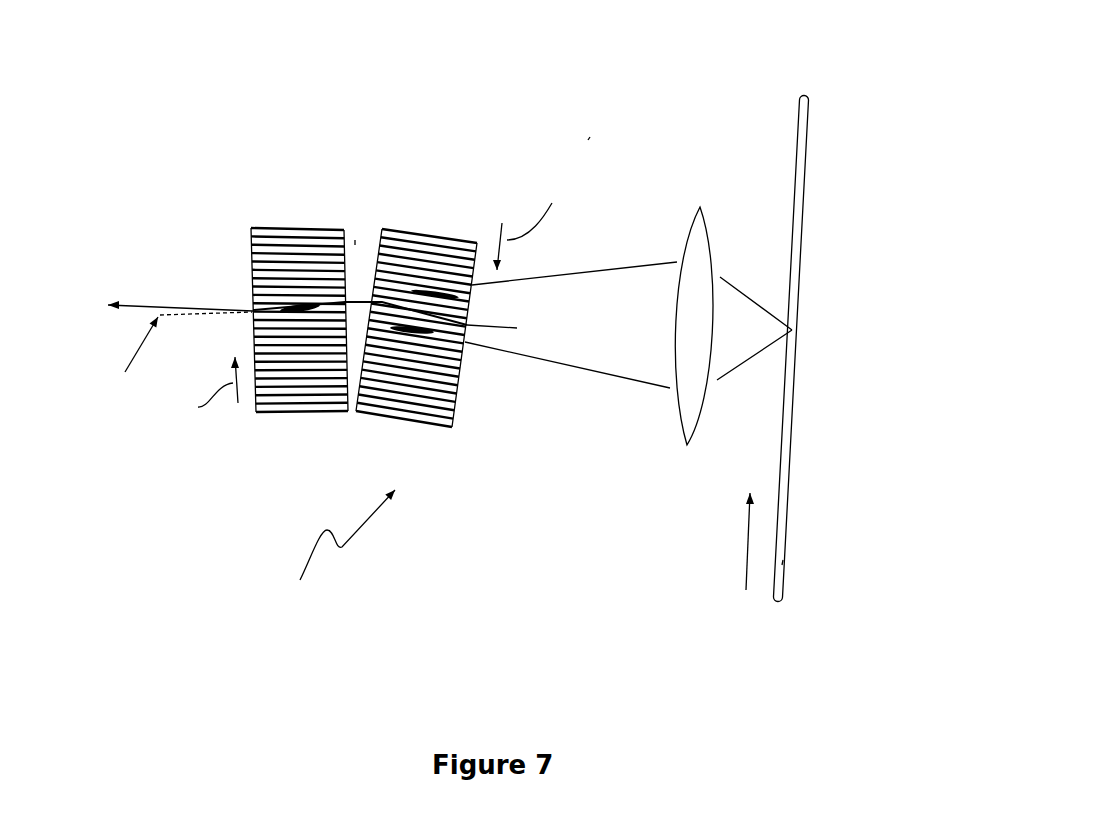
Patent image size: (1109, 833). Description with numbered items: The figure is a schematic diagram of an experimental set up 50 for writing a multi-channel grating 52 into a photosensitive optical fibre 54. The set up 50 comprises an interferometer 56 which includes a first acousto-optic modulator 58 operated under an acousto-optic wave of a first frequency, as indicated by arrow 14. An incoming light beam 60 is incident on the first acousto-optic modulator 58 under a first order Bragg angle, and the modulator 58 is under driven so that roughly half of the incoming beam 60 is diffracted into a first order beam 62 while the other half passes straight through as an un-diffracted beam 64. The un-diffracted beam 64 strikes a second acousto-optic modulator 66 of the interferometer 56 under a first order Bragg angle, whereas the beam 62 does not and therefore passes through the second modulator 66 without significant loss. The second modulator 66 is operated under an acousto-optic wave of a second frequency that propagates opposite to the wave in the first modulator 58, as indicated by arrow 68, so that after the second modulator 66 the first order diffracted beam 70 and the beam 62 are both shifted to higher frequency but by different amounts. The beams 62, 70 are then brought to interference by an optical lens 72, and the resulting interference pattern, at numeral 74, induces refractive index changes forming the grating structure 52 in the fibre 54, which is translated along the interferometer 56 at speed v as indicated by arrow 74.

The arrow 14 is at (203, 405).
The experimental set up 50 is at (588, 135).
The multi-channel grating 52 is at (807, 300).
The optical fibre 54 is at (786, 545).
The interferometer 56 is at (385, 563).
The first acousto-optic modulator 58 is at (275, 228).
The incoming light beam 60 is at (140, 303).
The first order beam 62 is at (357, 300).
The un-diffracted beam 64 is at (365, 318).
The second acousto-optic modulator 66 is at (422, 230).
The arrow 68 is at (632, 248).
The first order diffracted beam 70 is at (502, 353).
The optical lens 72 is at (687, 445).
The arrow 74 is at (747, 557).